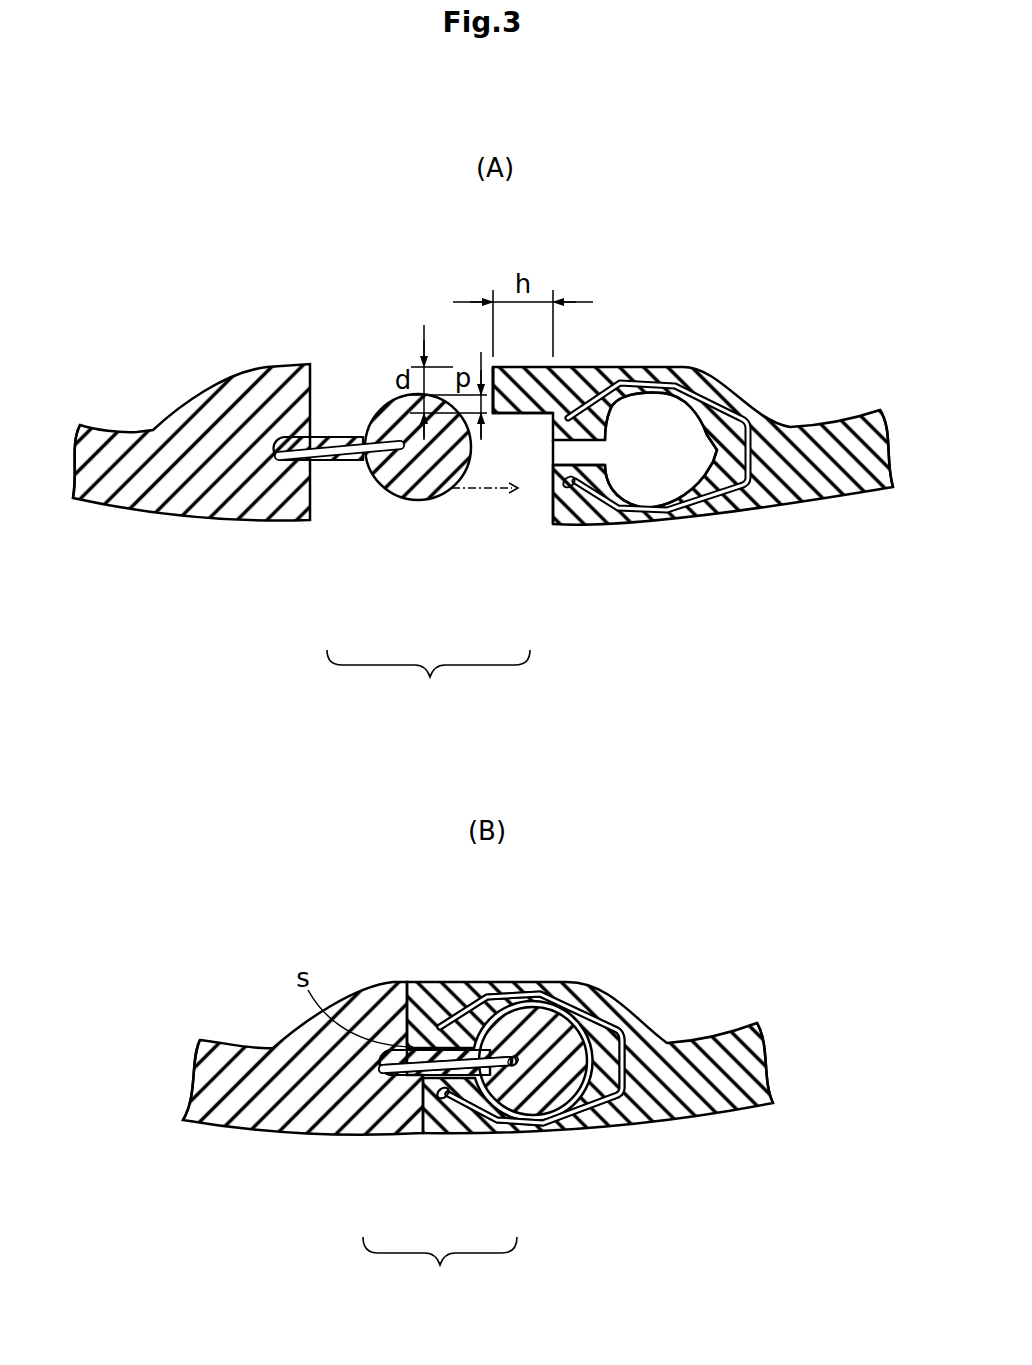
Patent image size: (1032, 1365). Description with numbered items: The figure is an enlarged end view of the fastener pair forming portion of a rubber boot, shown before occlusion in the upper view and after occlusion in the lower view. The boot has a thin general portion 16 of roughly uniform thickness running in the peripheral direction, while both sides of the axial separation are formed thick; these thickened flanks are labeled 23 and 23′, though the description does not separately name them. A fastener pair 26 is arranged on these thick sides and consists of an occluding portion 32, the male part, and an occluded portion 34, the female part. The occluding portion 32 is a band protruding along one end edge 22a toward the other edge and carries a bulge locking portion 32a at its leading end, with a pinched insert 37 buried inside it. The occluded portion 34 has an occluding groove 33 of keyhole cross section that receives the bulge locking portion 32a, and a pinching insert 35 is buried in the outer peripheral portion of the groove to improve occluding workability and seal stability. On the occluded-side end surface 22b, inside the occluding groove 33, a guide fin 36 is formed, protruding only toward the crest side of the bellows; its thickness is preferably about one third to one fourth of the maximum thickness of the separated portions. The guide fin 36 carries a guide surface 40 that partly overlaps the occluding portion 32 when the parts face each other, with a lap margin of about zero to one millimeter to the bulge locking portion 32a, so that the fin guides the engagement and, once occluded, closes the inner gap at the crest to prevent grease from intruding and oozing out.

The general portion 16 is at (121, 487).
The first block member 23 is at (191, 391).
The second block member 23' is at (693, 393).
The one end edge 22a is at (316, 398).
The occluded portion side end surface 22b is at (563, 497).
The fastener pair 26 is at (428, 976).
The occluding portion 32 is at (343, 458).
The bulge locking portion 32a is at (443, 478).
The occluding groove 33 is at (667, 480).
The occluded portion 34 is at (588, 518).
The pinching insert 35 is at (743, 485).
The guide fin 36 is at (545, 392).
The pinched insert 37 is at (326, 462).
The guide surface 40 is at (536, 415).